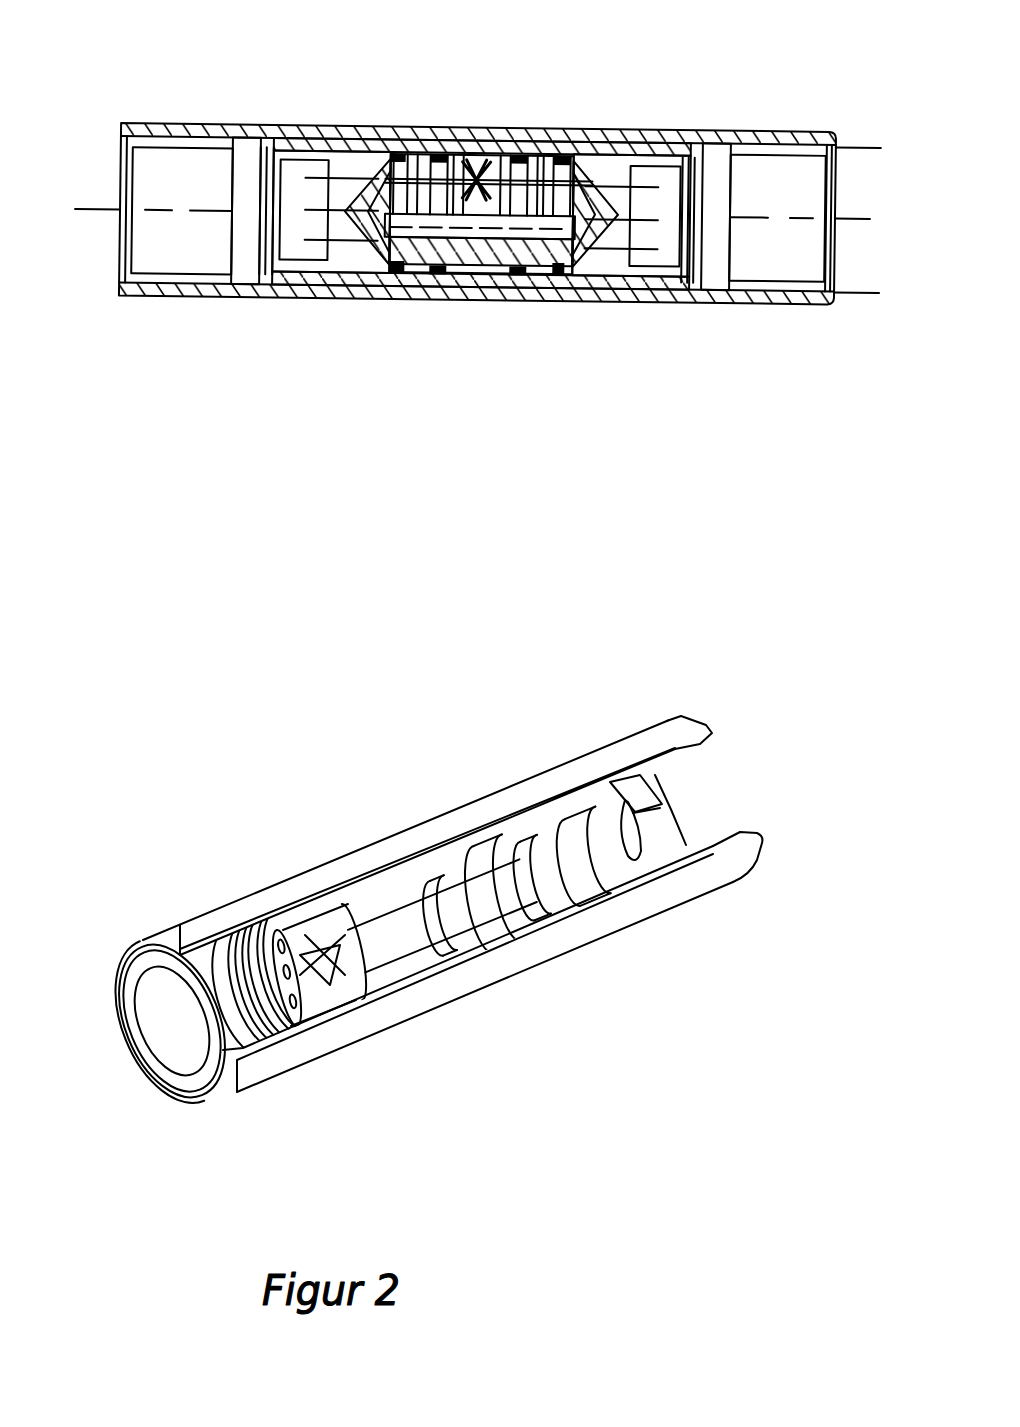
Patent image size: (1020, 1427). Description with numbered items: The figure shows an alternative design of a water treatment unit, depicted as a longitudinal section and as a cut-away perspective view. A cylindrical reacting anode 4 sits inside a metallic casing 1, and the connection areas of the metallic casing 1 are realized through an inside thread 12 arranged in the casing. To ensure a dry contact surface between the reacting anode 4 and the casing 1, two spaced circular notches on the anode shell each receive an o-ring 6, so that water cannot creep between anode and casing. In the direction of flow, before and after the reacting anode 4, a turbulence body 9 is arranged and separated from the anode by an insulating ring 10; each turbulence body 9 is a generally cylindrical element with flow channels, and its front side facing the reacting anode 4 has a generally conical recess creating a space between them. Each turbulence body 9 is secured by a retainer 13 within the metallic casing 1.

The metallic casing 1 is at (598, 128).
The reacting anode 4 is at (453, 255).
The o-ring 6 is at (512, 128).
The turbulence body 9 is at (292, 265).
The insulating ring 10 is at (398, 262).
The inside thread 12 is at (172, 250).
The retainer 13 is at (270, 125).